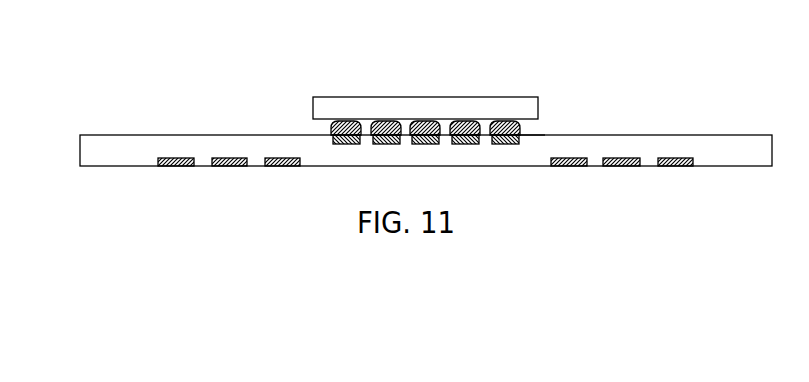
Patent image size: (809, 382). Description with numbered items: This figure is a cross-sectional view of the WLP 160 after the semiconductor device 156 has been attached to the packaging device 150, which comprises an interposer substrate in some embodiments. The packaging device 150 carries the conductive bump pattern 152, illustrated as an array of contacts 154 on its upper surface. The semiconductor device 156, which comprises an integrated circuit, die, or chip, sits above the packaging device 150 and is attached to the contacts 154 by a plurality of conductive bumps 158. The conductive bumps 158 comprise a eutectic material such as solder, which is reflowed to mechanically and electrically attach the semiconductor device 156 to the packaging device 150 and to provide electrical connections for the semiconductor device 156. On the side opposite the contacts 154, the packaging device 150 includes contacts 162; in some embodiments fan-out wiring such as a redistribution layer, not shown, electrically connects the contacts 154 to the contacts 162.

The packaging device 150 is at (113, 143).
The conductive bump pattern 152 is at (525, 139).
The contacts 154 is at (345, 145).
The semiconductor device 156 is at (345, 103).
The conductive bumps 158 is at (333, 131).
The WLP 160 is at (242, 70).
The contacts 162 is at (179, 166).